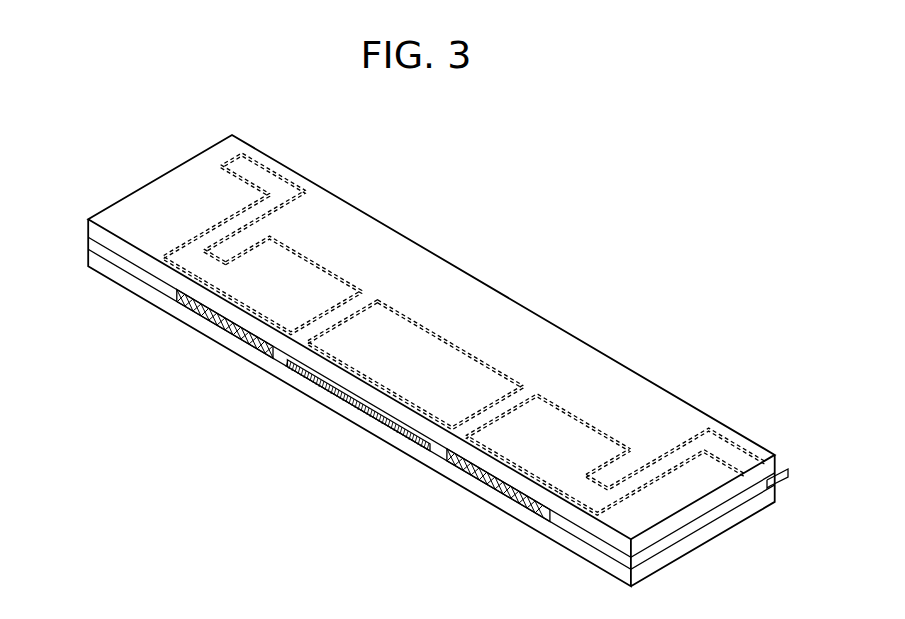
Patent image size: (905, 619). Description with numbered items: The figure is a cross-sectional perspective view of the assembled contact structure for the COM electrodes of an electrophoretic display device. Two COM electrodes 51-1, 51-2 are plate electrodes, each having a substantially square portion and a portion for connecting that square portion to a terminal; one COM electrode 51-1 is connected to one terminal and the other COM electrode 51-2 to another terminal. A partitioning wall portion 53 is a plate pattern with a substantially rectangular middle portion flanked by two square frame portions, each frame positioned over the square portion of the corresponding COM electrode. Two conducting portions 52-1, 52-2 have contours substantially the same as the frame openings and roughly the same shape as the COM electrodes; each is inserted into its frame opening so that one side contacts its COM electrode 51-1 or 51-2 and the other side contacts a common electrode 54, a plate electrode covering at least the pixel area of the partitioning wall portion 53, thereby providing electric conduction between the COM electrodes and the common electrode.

The COM electrode 51-1 is at (283, 176).
The COM electrode 51-2 is at (732, 445).
The conducting portion 52-1 is at (260, 298).
The conducting portion 52-2 is at (527, 459).
The partitioning wall portion 53 is at (402, 337).
The common electrode 54 is at (370, 236).